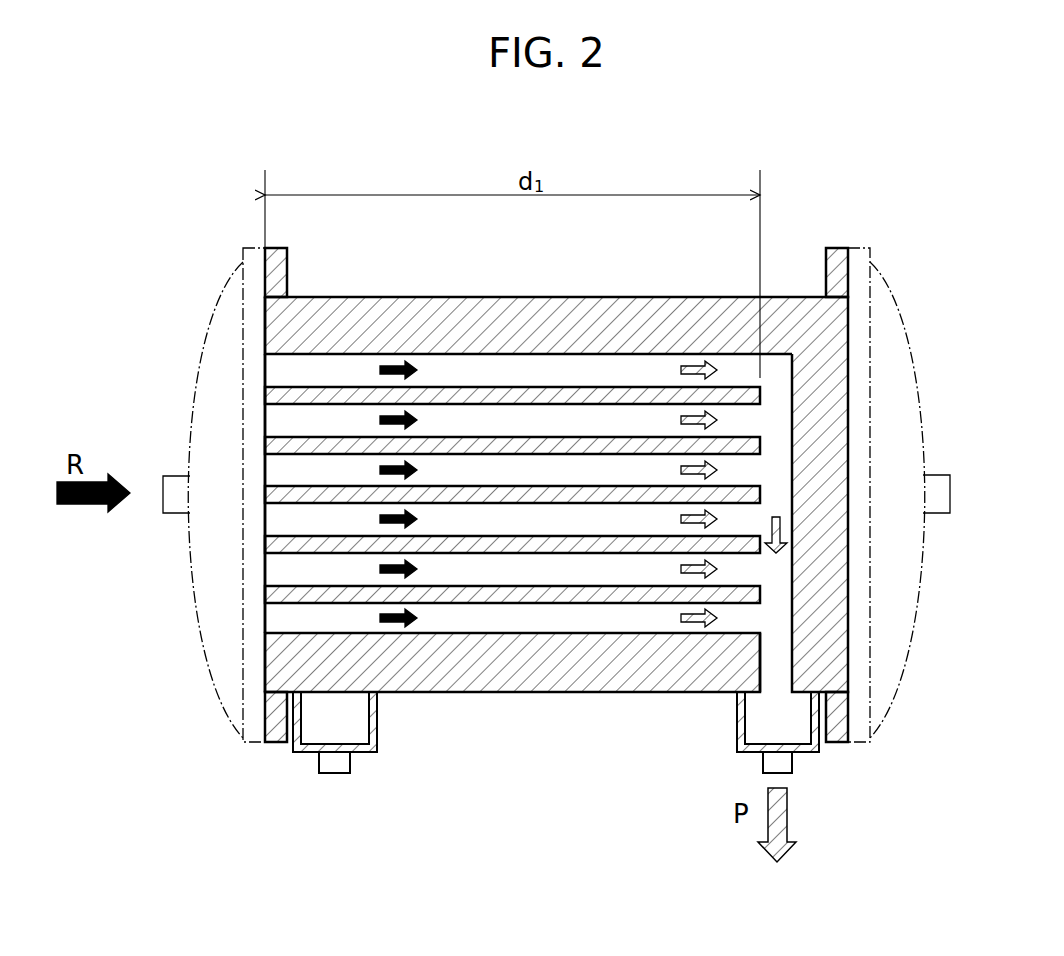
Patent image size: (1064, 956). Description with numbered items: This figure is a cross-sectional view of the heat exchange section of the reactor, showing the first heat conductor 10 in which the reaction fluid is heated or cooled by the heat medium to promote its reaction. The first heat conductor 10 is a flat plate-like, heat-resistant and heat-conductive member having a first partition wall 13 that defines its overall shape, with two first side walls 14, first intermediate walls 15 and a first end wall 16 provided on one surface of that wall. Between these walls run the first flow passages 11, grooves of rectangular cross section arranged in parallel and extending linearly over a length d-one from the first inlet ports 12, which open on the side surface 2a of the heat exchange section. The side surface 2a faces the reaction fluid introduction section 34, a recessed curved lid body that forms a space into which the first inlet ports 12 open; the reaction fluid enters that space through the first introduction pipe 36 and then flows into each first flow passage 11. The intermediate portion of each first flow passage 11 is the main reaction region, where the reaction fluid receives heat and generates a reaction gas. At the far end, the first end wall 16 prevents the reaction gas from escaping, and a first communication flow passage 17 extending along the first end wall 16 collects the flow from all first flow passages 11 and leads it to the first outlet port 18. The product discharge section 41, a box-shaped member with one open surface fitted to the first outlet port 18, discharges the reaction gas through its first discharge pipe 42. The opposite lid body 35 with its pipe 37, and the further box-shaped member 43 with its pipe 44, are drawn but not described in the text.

The first heat conductor 10 is at (525, 490).
The first flow passage 11 is at (348, 383).
The first inlet port 12 is at (265, 368).
The first partition wall 13 is at (615, 370).
The first side wall 14 is at (440, 312).
The first intermediate wall 15 is at (473, 393).
The first end wall 16 is at (823, 443).
The first communication flow passage 17 is at (773, 488).
The first outlet port 18 is at (787, 655).
The side surface 2a is at (265, 664).
The reaction fluid introduction section 34 is at (220, 347).
The outlet tank 35 is at (893, 352).
The first introduction pipe 36 is at (173, 477).
The outlet port 37 is at (937, 468).
The product discharge section 41 is at (737, 728).
The first discharge pipe 42 is at (763, 765).
The drain housing 43 is at (377, 728).
The drain pipe 44 is at (350, 765).